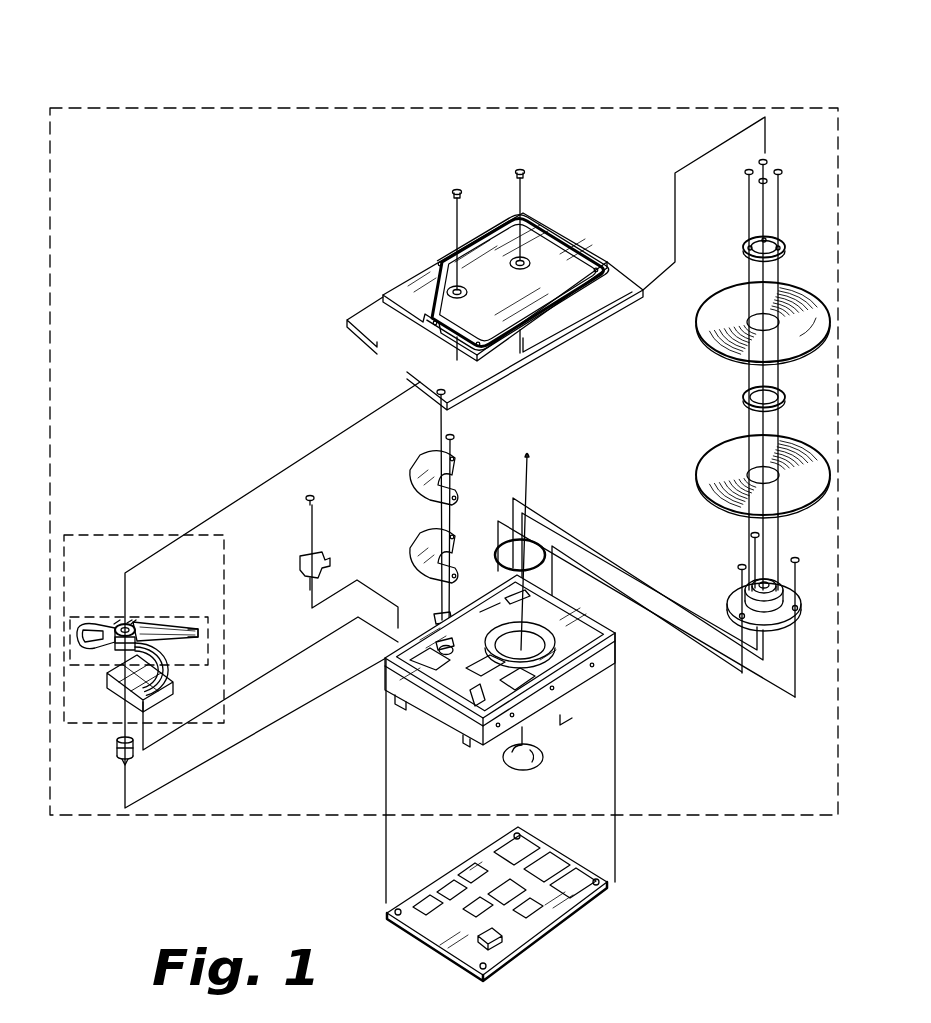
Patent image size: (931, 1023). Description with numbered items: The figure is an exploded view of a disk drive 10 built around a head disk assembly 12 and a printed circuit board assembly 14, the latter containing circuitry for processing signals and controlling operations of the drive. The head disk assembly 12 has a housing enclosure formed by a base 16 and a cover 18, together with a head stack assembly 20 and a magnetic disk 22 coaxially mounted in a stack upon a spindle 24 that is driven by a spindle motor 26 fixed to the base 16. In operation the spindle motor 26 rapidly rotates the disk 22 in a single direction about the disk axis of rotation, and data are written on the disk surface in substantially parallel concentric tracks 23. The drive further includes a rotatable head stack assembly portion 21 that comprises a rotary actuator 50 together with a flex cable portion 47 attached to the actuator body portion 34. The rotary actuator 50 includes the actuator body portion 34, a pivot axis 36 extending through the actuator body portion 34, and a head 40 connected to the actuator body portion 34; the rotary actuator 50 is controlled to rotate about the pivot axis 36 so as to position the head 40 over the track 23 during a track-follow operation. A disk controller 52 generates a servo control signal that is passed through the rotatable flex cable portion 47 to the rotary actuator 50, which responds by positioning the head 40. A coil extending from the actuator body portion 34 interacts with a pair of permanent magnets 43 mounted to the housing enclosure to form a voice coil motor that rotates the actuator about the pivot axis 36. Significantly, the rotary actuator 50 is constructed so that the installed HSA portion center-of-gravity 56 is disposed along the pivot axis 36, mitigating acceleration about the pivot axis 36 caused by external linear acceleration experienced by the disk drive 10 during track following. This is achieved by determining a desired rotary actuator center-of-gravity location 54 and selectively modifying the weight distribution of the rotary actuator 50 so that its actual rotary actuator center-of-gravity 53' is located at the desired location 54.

The disk drive 10 is at (330, 72).
The head disk assembly 12 is at (722, 818).
The printed circuit board assembly 14 is at (548, 932).
The base 16 is at (557, 690).
The cover 18 is at (410, 280).
The head stack assembly 20 is at (105, 533).
The rotatable head stack assembly portion 21 is at (190, 614).
The disk 22 is at (720, 302).
The track 23 is at (806, 340).
The spindle 24 is at (780, 592).
The spindle motor 26 is at (736, 598).
The actuator body portion 34 is at (82, 648).
The pivot axis 36 is at (121, 622).
The head 40 is at (208, 630).
The permanent magnets 43 is at (418, 468).
The flex cable portion 47 is at (168, 662).
The rotary actuator 50 is at (87, 640).
The disk controller 52 is at (508, 887).
The actual rotary actuator center-of-gravity 53' is at (173, 583).
The desired rotary actuator center-of-gravity location 54 is at (129, 622).
The installed HSA portion center-of-gravity 56 is at (117, 621).